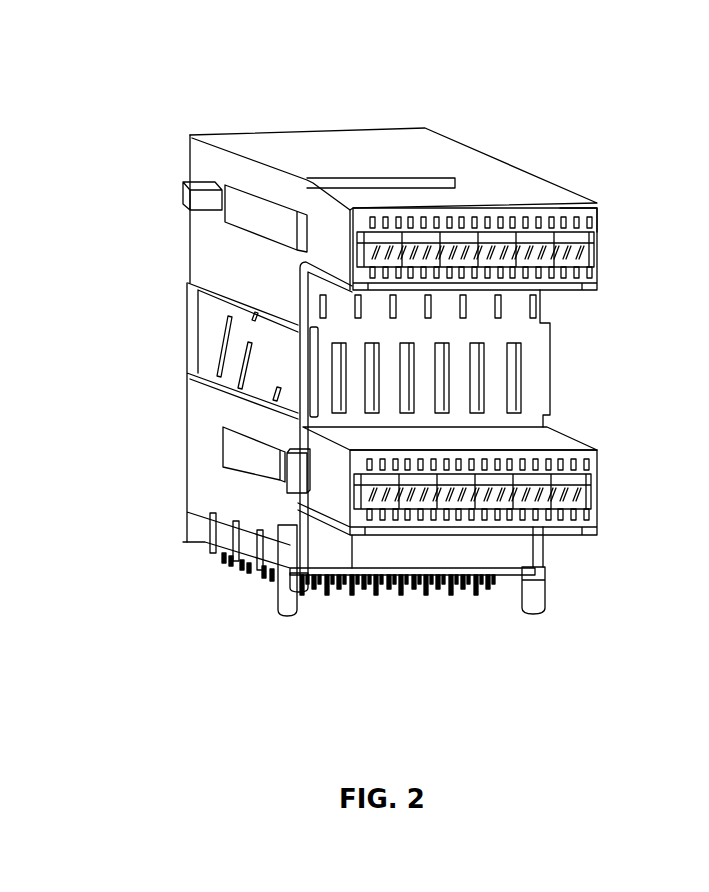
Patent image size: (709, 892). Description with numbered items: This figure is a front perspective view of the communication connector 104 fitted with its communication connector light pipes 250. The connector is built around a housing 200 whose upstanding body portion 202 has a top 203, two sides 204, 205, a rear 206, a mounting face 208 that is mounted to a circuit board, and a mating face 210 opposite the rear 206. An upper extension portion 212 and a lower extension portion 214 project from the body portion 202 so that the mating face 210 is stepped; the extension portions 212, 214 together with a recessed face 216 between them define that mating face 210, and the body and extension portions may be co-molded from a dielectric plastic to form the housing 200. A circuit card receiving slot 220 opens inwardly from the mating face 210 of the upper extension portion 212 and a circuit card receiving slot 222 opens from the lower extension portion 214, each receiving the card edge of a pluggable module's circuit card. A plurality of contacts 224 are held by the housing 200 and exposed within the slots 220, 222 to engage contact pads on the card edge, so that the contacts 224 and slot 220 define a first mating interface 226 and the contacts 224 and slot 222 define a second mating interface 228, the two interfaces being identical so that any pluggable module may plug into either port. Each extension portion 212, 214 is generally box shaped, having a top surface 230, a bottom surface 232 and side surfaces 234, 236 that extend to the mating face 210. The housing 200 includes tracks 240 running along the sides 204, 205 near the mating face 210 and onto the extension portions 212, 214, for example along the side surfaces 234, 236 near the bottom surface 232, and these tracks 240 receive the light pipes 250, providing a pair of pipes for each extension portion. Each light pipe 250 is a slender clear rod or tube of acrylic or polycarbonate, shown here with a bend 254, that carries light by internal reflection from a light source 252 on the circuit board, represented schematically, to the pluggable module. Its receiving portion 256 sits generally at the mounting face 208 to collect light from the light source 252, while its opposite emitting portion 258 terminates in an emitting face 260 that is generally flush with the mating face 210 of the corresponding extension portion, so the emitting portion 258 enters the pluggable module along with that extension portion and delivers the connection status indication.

The communication connector 104 is at (260, 97).
The housing 200 is at (383, 135).
The upstanding body portion 202 is at (205, 435).
The top 203 is at (447, 152).
The side 204 is at (498, 192).
The side 205 is at (203, 253).
The rear 206 is at (257, 133).
The mounting face 208 is at (234, 601).
The mating face 210 is at (618, 505).
The upper extension portion 212 is at (560, 200).
The lower extension portion 214 is at (560, 440).
The recessed face 216 is at (532, 400).
The circuit card receiving slot 220 is at (592, 250).
The circuit card receiving slot 222 is at (594, 483).
The contacts 224 is at (593, 204).
The first mating interface 226 is at (566, 278).
The second mating interface 228 is at (560, 527).
The top surface 230 is at (527, 195).
The bottom surface 232 is at (515, 340).
The side surface 234 is at (600, 218).
The side surface 236 is at (332, 233).
The tracks 240 is at (272, 472).
The communication connector light pipes 250 is at (303, 377).
The light sources 252 is at (303, 603).
The bend 254 is at (227, 567).
The receiving portion 256 is at (330, 597).
The emitting portion 258 is at (338, 593).
The emitting face 260 is at (400, 593).